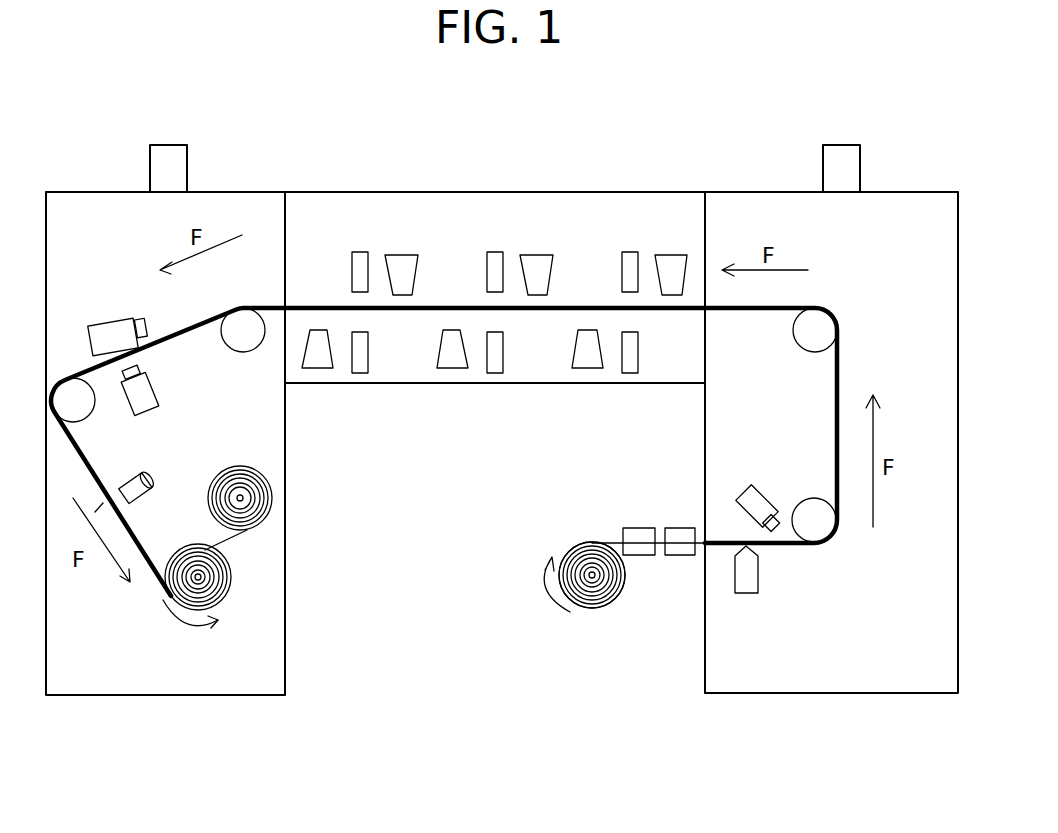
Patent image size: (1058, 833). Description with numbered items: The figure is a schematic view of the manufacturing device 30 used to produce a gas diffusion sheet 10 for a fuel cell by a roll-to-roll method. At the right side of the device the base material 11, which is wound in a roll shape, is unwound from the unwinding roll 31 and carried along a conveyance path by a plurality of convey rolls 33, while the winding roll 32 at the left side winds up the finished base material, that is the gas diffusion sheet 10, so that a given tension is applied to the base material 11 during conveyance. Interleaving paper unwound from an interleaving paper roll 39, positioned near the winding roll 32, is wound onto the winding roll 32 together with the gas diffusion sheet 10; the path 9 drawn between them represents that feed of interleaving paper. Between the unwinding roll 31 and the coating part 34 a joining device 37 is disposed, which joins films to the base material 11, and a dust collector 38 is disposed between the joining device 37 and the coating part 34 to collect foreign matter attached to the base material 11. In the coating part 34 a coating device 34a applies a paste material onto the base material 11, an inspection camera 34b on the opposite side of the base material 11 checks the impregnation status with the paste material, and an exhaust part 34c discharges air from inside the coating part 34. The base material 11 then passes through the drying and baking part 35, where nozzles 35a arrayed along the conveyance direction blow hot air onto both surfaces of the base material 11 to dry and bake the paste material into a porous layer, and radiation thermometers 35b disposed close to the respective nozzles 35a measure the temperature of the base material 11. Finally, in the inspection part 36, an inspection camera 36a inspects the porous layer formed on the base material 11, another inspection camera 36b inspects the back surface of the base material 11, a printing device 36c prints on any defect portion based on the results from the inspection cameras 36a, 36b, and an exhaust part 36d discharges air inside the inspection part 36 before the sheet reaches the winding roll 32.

The manufacturing device 30 is at (446, 119).
The inspection part 36 is at (88, 237).
The exhaust part 36d is at (192, 173).
The inspection camera 36a is at (120, 328).
The inspection camera 36b is at (148, 395).
The printing device 36c is at (137, 480).
The drying and baking part 35 is at (462, 215).
The nozzles 35a is at (403, 265).
The radiation thermometers 35b is at (360, 262).
The coating part 34 is at (915, 232).
The exhaust part 34c is at (820, 173).
The coating device 34a is at (748, 590).
The inspection camera 34b is at (754, 492).
The convey rolls 33 is at (240, 320).
The unwinding roll 31 is at (585, 552).
The winding roll 32 is at (196, 576).
The joining device 37 is at (640, 526).
The dust collector 38 is at (682, 526).
The interleaving paper roll 39 is at (240, 495).
The web 9 is at (210, 545).
The gas diffusion sheet 10 is at (227, 603).
The base material 11 is at (607, 600).